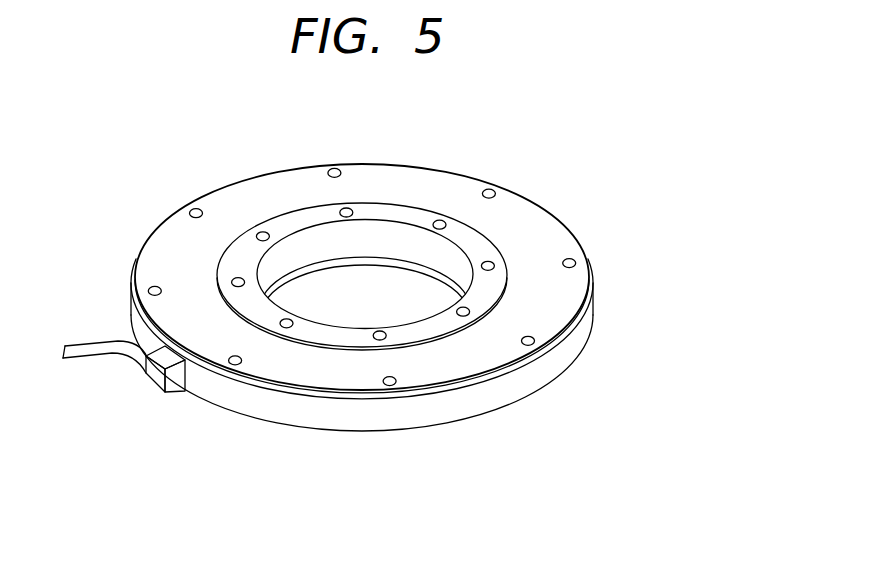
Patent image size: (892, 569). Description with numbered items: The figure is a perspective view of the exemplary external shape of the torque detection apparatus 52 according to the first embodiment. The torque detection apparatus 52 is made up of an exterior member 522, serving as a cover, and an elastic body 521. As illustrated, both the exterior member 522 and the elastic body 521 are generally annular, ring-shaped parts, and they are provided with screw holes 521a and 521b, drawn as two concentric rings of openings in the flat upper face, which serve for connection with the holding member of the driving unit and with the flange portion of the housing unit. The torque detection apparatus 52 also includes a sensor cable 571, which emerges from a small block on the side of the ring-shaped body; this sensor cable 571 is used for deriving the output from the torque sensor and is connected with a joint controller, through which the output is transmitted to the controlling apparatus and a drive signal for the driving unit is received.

The torque detection apparatus 52 is at (152, 136).
The elastic body 521 is at (468, 405).
The screw holes 521a is at (346, 208).
The screw holes 521b is at (577, 262).
The exterior member 522 is at (488, 355).
The sensor cable 571 is at (98, 357).